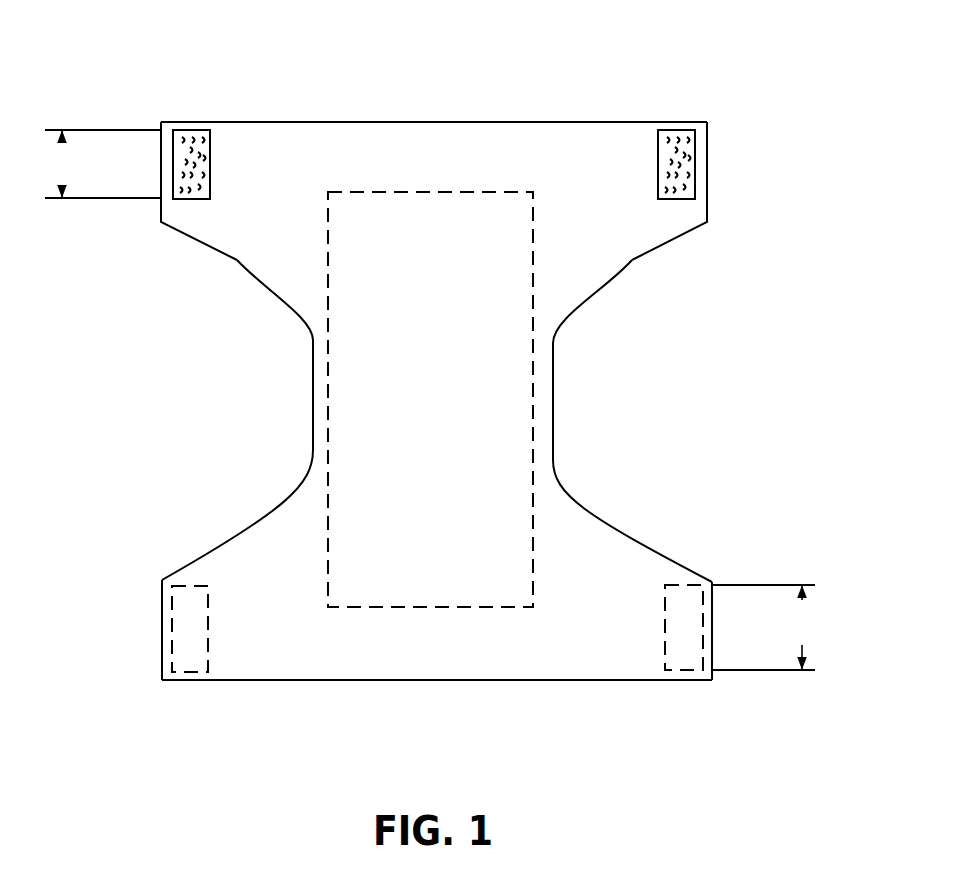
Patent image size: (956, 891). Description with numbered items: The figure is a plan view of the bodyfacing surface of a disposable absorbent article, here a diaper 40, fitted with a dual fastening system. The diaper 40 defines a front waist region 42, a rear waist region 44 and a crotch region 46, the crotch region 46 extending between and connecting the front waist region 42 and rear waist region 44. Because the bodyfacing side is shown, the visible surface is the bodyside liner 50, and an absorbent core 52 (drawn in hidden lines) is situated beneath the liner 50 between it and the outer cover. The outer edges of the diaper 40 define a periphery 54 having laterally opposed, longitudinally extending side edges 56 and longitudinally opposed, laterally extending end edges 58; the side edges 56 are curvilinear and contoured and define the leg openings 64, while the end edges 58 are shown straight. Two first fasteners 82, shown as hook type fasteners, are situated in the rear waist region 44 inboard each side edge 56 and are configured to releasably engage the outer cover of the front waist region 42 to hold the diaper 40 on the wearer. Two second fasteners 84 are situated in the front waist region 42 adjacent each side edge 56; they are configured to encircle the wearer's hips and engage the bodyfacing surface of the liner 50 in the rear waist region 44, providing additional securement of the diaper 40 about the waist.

The diaper 40 is at (692, 86).
The front waist region 42 is at (128, 642).
The rear waist region 44 is at (729, 177).
The crotch region 46 is at (591, 392).
The bodyside liner 50 is at (265, 135).
The absorbent core 52 is at (343, 316).
The periphery 54 is at (578, 122).
The longitudinal side edges 56 is at (313, 445).
The end edges 58 is at (345, 122).
The leg openings 64 is at (237, 375).
The first fasteners 82 is at (173, 170).
The second fasteners 84 is at (163, 605).